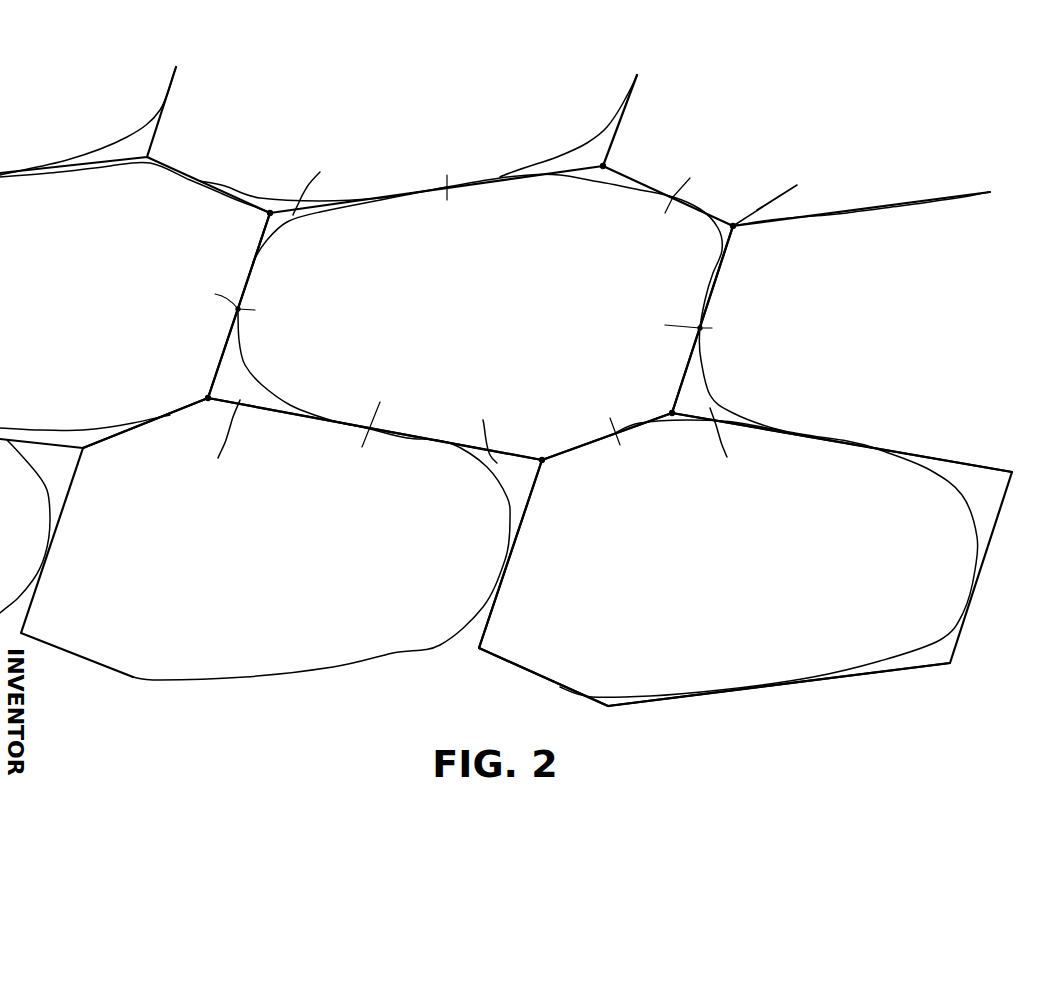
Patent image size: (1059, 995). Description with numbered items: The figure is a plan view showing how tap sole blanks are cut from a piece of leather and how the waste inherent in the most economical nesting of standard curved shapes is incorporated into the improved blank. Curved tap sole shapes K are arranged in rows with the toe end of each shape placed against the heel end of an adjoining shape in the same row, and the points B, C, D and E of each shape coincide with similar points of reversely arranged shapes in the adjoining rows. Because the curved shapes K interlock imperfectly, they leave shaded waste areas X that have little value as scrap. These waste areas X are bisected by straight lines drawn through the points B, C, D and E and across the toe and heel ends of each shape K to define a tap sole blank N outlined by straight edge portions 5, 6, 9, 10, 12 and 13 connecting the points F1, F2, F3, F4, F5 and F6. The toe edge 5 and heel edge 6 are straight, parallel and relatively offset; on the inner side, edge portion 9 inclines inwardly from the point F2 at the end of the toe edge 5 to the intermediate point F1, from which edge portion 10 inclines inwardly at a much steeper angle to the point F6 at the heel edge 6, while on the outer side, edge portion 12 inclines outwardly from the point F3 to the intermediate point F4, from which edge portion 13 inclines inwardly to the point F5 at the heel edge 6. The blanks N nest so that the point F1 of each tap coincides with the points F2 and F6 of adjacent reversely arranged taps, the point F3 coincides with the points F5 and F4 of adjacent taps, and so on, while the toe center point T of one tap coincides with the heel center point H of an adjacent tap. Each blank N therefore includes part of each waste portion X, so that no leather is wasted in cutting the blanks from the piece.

The toe edge 5 is at (702, 357).
The heel edge 6 is at (690, 360).
The edge portion 9 is at (733, 422).
The edge portion 10 is at (647, 418).
The edge portion 12 is at (790, 220).
The edge portion 13 is at (643, 192).
The point B is at (369, 426).
The point C is at (612, 433).
The point D is at (447, 193).
The point E is at (683, 203).
The center point of the heel cut H is at (448, 307).
The center point of the toe T is at (489, 319).
The tap sole shape K is at (86, 175).
The tap sole blank N is at (571, 439).
The waste area X is at (514, 322).
The intermediate point F1 is at (673, 447).
The left hand end of the toe edge F2 is at (1025, 462).
The right hand end of the toe edge F3 is at (962, 672).
The intermediate point F4 is at (612, 696).
The right hand end of the heel edge F5 is at (500, 638).
The left hand end of the heel edge F6 is at (672, 413).